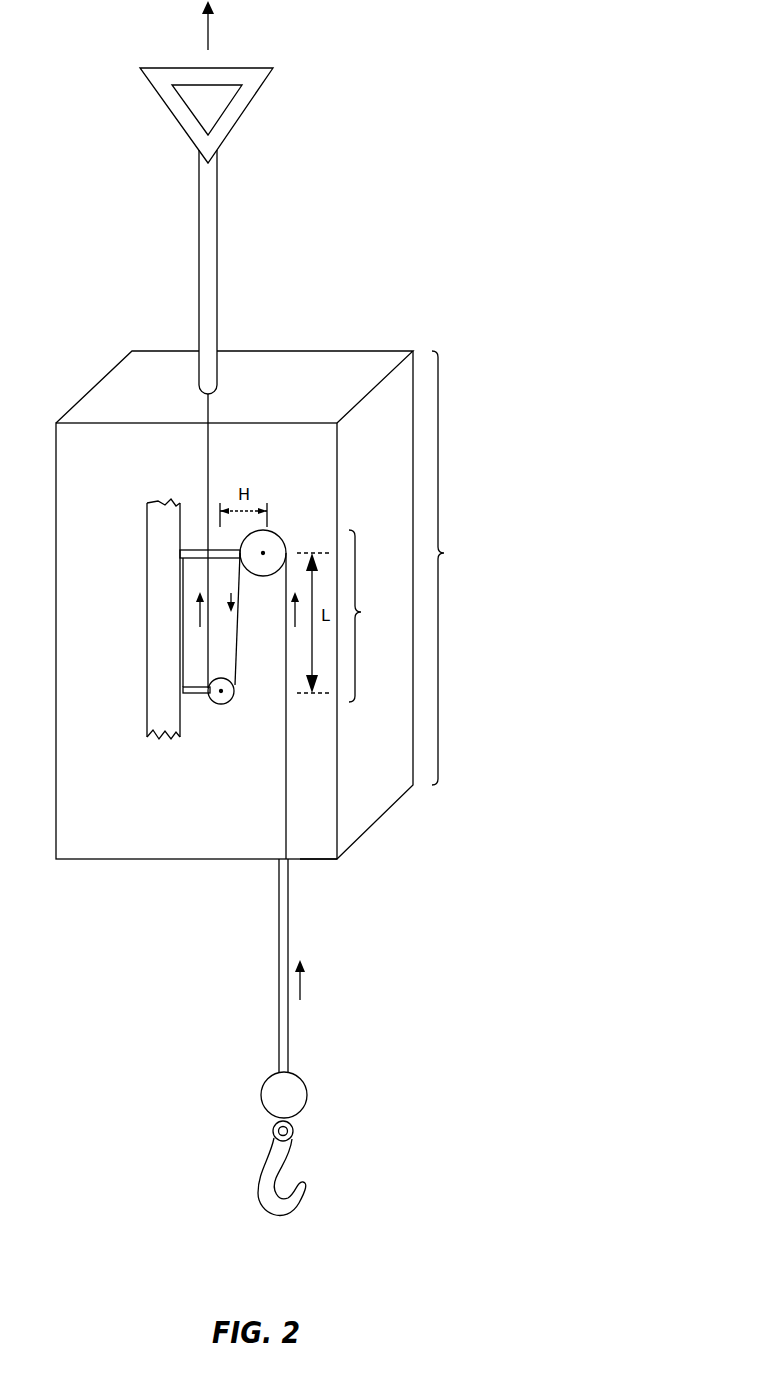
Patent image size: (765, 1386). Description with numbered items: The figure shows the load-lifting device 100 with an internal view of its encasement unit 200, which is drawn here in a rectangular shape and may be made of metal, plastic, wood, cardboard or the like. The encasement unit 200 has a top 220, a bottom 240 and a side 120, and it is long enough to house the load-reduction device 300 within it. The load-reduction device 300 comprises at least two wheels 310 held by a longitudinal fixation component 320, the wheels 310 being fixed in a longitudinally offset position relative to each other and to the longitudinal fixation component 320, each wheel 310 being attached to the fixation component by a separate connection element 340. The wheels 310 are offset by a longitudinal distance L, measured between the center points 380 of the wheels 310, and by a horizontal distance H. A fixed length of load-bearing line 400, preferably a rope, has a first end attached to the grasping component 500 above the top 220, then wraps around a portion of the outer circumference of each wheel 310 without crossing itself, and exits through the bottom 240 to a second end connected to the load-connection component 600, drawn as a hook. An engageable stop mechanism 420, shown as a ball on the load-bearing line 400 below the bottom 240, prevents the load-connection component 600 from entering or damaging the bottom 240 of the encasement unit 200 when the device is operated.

The load-lifting device 100 is at (493, 249).
The side of the encasement unit 120 is at (382, 430).
The encasement unit 200 is at (459, 568).
The top of the encasement unit 220 is at (308, 370).
The bottom of the encasement unit 240 is at (322, 861).
The load-reduction device 300 is at (376, 616).
The wheels 310 is at (262, 540).
The longitudinal fixation component 320 is at (163, 650).
The connection element 340 is at (193, 549).
The center point of wheel 380 is at (264, 552).
The fixed length of load-bearing line 400 is at (208, 466).
The engageable stop mechanism 420 is at (296, 1088).
The grasping component 500 is at (258, 104).
The load-connection component 600 is at (298, 1205).